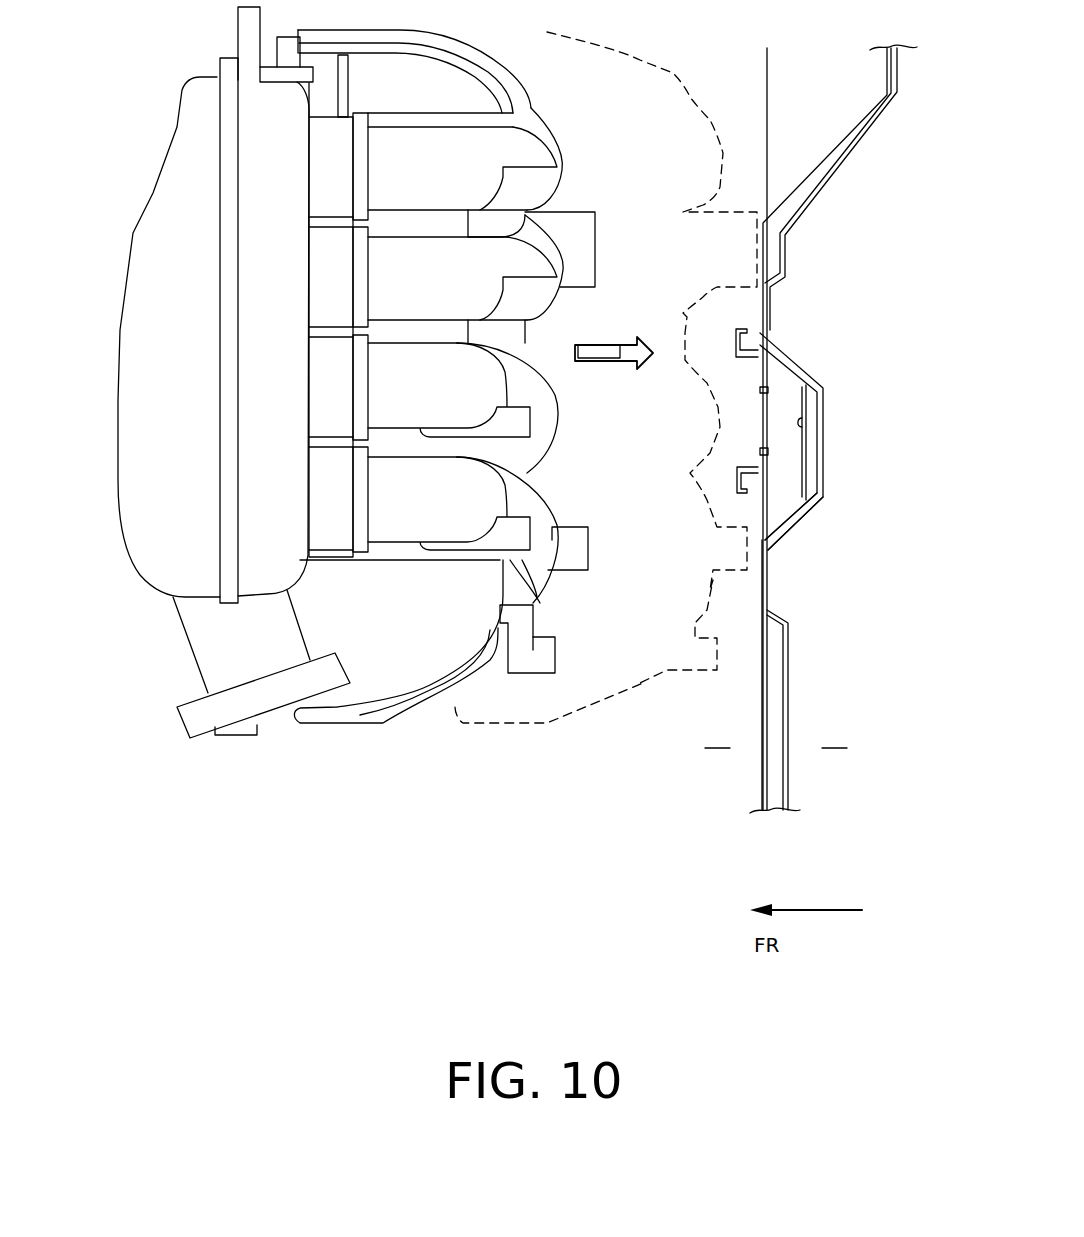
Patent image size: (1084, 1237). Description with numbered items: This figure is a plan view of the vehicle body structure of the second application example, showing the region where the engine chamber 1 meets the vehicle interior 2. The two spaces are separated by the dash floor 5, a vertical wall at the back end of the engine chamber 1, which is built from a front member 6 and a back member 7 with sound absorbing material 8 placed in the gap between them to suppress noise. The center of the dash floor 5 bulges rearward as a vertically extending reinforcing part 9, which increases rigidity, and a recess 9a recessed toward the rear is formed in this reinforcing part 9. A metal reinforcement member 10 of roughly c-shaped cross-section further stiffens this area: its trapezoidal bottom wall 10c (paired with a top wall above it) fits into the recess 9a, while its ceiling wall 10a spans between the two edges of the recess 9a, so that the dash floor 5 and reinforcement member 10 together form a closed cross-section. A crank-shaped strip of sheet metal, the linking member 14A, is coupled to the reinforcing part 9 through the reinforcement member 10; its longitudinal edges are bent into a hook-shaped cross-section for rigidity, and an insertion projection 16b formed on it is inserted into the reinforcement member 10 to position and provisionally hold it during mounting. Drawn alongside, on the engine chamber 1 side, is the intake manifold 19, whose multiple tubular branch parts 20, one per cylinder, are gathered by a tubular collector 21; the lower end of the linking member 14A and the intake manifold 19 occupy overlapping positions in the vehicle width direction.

The engine chamber 1 is at (717, 737).
The vehicle interior 2 is at (834, 737).
The dash floor 5 is at (848, 168).
The front member 6 is at (827, 138).
The back member 7 is at (877, 120).
The sound absorbing material 8 is at (870, 103).
The reinforcing part 9 is at (797, 360).
The recess 9a is at (803, 427).
The reinforcement member 10 is at (775, 507).
The ceiling wall 10a is at (760, 527).
The bottom wall 10c is at (792, 487).
The linking member 14A is at (742, 421).
The insertion projection 16b is at (768, 390).
The intake manifold 19 is at (174, 126).
The branch parts 20 is at (560, 137).
The collector 21 is at (124, 295).